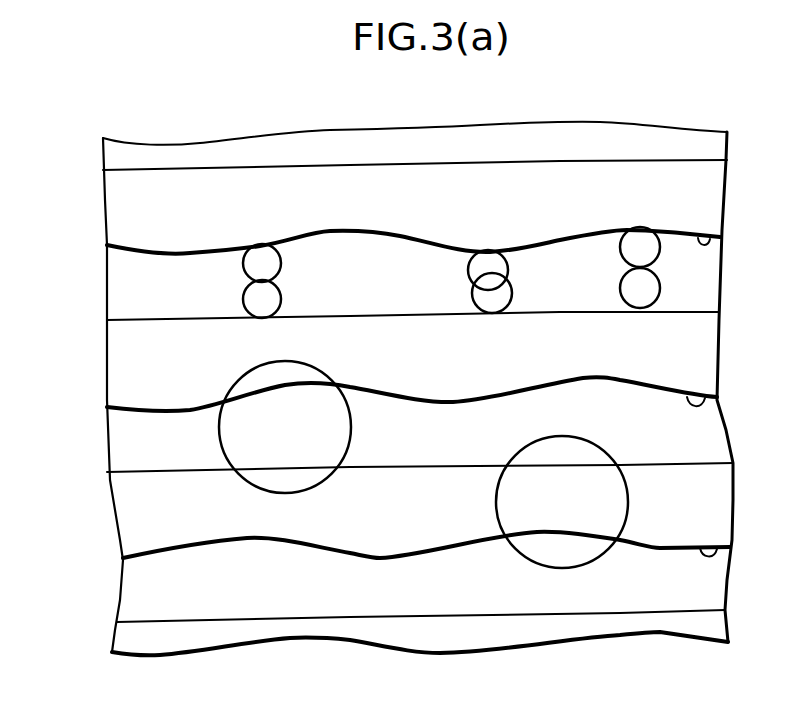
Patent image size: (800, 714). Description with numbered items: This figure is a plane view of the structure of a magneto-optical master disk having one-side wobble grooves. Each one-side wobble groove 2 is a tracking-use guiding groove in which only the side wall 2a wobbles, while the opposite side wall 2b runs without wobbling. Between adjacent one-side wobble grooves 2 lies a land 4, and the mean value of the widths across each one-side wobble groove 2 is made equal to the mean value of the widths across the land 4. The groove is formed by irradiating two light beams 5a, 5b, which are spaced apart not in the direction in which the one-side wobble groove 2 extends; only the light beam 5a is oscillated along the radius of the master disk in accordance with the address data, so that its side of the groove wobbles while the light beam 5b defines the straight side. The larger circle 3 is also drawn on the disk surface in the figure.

The one-side wobble groove 2 is at (603, 248).
The side wall 2a is at (707, 240).
The lower surface of elastic layer 2b is at (140, 320).
The large particle 3 is at (328, 373).
The land 4 is at (593, 172).
The light beam 5a is at (262, 257).
The light beam 5b is at (272, 302).